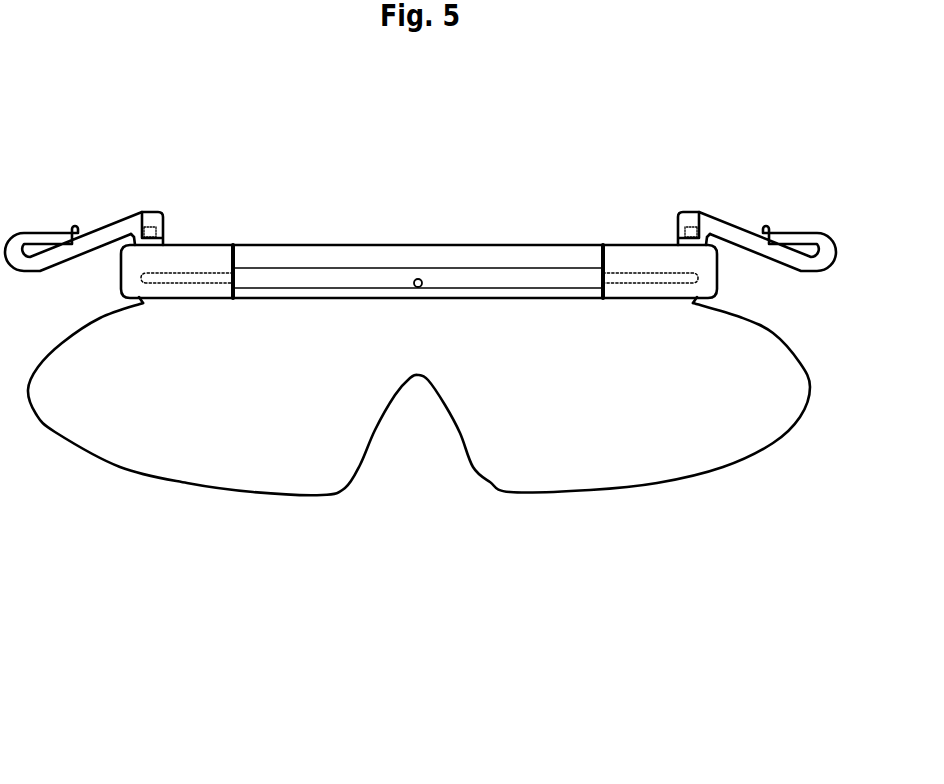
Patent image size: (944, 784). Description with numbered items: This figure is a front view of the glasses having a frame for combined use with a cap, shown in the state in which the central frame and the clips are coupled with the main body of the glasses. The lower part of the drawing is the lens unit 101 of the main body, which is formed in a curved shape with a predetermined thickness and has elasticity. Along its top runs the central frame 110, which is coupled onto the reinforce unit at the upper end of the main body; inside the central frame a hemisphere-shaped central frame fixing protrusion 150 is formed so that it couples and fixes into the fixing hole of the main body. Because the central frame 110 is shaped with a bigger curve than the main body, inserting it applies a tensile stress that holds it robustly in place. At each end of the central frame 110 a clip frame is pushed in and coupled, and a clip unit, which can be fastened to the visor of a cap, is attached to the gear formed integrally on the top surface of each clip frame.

The lens unit 101 is at (510, 463).
The central frame 110 is at (313, 244).
The central frame fixing protrusion 150 is at (420, 279).